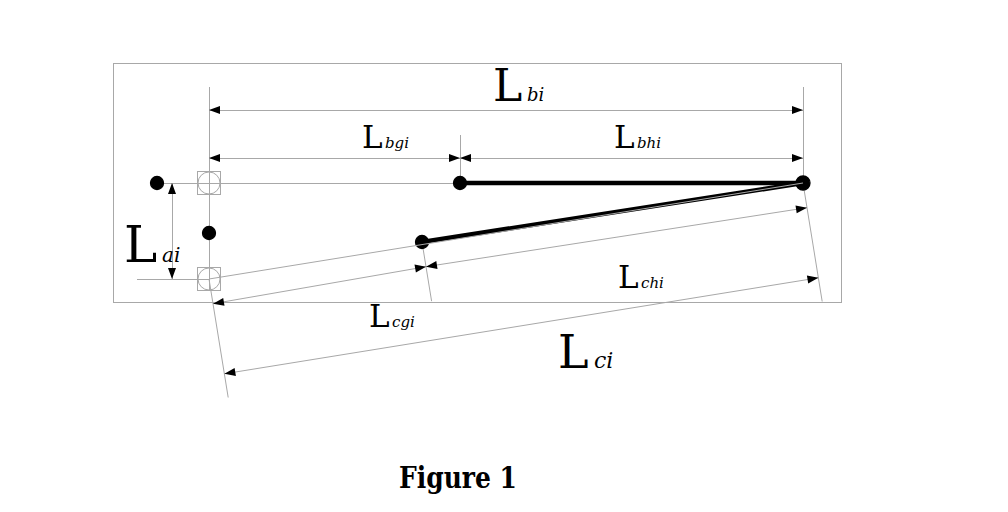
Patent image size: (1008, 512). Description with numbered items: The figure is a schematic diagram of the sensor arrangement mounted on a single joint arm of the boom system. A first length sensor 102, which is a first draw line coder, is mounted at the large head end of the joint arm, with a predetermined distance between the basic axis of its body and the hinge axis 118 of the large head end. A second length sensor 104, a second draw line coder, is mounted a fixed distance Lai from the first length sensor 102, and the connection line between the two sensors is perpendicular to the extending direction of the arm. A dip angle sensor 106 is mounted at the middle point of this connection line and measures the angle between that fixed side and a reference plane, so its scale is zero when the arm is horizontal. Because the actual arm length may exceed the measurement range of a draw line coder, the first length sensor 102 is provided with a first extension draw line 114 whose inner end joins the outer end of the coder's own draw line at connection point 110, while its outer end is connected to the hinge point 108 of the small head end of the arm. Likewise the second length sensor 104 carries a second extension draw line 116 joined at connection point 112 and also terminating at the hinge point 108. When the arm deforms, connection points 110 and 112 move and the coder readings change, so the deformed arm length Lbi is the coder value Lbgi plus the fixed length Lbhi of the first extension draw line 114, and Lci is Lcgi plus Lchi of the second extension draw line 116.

The first length sensor 102 is at (207, 181).
The second length sensor 104 is at (207, 281).
The dip angle sensor 106 is at (203, 230).
The hinge point of the small head end 108 is at (808, 180).
The draw line outer end connection point 110 is at (459, 181).
The draw line outer end connection point 112 is at (424, 244).
The first extension draw line 114 is at (688, 181).
The second extension draw line 116 is at (682, 226).
The hinge axis of the large head end 118 is at (152, 180).